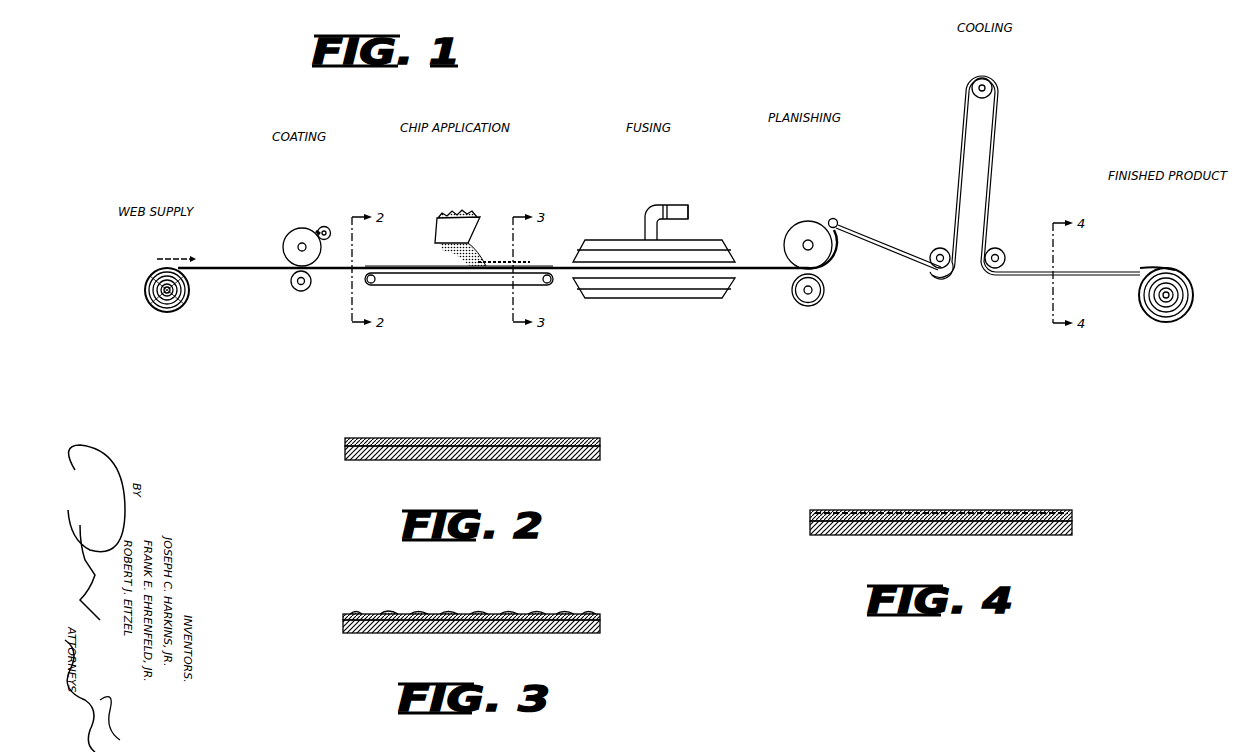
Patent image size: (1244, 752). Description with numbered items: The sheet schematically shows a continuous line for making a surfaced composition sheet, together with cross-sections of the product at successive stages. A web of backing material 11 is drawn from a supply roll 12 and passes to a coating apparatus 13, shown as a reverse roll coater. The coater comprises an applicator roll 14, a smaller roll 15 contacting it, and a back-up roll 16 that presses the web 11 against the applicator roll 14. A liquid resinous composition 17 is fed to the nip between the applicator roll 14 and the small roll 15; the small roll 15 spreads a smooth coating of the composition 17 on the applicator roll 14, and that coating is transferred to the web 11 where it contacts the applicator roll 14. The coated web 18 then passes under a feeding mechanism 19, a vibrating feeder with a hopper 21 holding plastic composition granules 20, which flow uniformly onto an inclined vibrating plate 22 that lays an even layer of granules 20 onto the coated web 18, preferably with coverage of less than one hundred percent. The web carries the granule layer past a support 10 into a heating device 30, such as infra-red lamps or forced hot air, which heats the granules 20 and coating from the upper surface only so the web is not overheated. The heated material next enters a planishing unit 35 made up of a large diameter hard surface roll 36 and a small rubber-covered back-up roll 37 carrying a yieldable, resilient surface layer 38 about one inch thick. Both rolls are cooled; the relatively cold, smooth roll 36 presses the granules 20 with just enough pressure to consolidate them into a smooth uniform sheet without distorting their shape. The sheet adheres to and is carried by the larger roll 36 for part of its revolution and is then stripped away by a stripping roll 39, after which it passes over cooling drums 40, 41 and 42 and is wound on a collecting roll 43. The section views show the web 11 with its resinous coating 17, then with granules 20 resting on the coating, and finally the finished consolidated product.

In FIG. 1, the conveyor belt 10 is at (476, 285).
In FIG. 1, the web of backing material 11 is at (239, 272).
In FIG. 2, the web of backing material 11 is at (600, 456).
In FIG. 3, the web of backing material 11 is at (600, 629).
In FIG. 4, the web of backing material 11 is at (1072, 530).
In FIG. 1, the supply roll 12 is at (150, 302).
In FIG. 1, the coating apparatus 13 is at (284, 241).
In FIG. 1, the applicator roll 14 is at (297, 228).
In FIG. 1, the smaller roll 15 is at (329, 228).
In FIG. 1, the back-up roll 16 is at (306, 290).
In FIG. 1, the liquid resinous composition 17 is at (318, 231).
In FIG. 2, the liquid resinous composition 17 is at (375, 438).
In FIG. 3, the liquid resinous composition 17 is at (360, 614).
In FIG. 4, the liquid resinous composition 17 is at (858, 510).
In FIG. 1, the coated web 18 is at (395, 265).
In FIG. 1, the feeding mechanism 19 is at (459, 228).
In FIG. 1, the plastic composition granules 20 is at (485, 262).
In FIG. 3, the plastic composition granules 20 is at (524, 613).
In FIG. 4, the plastic composition granules 20 is at (966, 510).
In FIG. 1, the hopper 21 is at (437, 226).
In FIG. 1, the inclined vibrating plate 22 is at (446, 250).
In FIG. 1, the heating device 30 is at (718, 180).
In FIG. 1, the planishing unit 35 is at (824, 244).
In FIG. 1, the large diameter hard surface roll 36 is at (795, 228).
In FIG. 1, the rubber-covered back-up roll 37 is at (800, 302).
In FIG. 1, the surface layer 38 is at (820, 300).
In FIG. 1, the stripping roll 39 is at (837, 228).
In FIG. 1, the cooling drum 40 is at (932, 252).
In FIG. 1, the cooling drum 41 is at (971, 86).
In FIG. 1, the cooling drum 42 is at (1003, 252).
In FIG. 1, the collecting roll 43 is at (1160, 322).